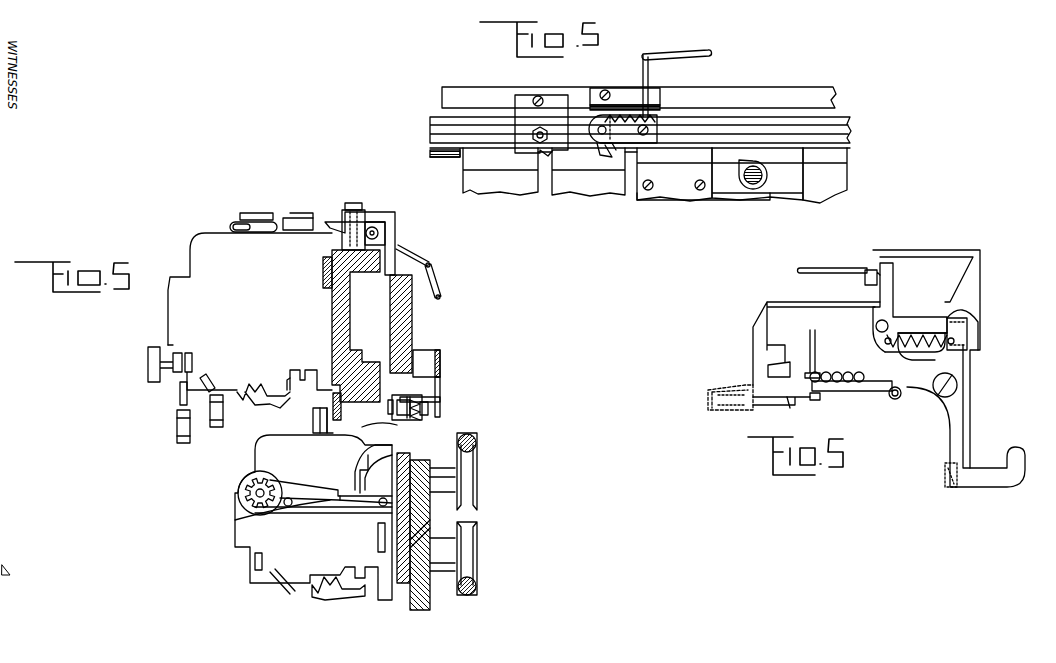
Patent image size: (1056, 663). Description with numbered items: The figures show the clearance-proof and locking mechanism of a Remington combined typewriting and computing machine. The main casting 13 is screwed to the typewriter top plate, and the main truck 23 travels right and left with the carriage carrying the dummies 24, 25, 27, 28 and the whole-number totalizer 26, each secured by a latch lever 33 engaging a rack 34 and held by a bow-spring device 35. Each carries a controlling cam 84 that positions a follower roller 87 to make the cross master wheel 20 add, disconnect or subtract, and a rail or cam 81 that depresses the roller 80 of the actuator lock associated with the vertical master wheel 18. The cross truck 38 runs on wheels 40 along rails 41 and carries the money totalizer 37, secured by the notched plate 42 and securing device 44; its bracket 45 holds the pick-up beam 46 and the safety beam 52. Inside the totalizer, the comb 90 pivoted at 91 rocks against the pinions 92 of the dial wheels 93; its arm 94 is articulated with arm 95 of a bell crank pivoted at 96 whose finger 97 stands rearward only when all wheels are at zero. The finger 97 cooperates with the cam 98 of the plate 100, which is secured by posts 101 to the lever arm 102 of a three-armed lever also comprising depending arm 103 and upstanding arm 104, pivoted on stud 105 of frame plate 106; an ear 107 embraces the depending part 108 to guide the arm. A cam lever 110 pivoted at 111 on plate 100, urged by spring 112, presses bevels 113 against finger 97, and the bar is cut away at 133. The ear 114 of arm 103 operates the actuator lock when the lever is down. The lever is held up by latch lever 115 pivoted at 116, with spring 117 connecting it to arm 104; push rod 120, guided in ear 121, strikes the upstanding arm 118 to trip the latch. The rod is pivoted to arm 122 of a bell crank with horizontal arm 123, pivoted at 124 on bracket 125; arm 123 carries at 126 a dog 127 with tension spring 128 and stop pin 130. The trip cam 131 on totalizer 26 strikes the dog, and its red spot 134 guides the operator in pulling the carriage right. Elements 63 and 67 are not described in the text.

In FIG. 4, the casting 13 is at (485, 88).
In FIG. 5, the casting 13 is at (412, 318).
In FIG. 5, the vertical master wheel 18 is at (258, 400).
In FIG. 5, the cross master wheel 20 is at (326, 598).
In FIG. 4, the main truck 23 is at (432, 135).
In FIG. 5, the main truck 23 is at (332, 323).
In FIG. 4, the dummy 24 is at (500, 171).
In FIG. 4, the dummy 25 is at (575, 196).
In FIG. 4, the totalizer 26 is at (692, 200).
In FIG. 4, the dummy 27 is at (773, 196).
In FIG. 4, the dummy 28 is at (818, 189).
In FIG. 5, the latch lever 33 is at (258, 213).
In FIG. 4, the rack 34 is at (455, 158).
In FIG. 5, the rack 34 is at (323, 272).
In FIG. 5, the bow-spring device 35 is at (232, 225).
In FIG. 5, the money totalizer 37 is at (255, 455).
In FIG. 5, the cross truck 38 is at (431, 605).
In FIG. 5, the wheels 40 is at (478, 500).
In FIG. 5, the tracks or rails 41 is at (476, 446).
In FIG. 5, the plate 42 is at (360, 481).
In FIG. 5, the securing device 44 is at (383, 554).
In FIG. 5, the bracket 45 is at (313, 420).
In FIG. 5, the pick-up beam 46 is at (338, 424).
In FIG. 5, the safety beam 52 is at (320, 434).
In FIG. 5, the casing wall 63 is at (318, 389).
In FIG. 5, the shaft 67 is at (421, 535).
In FIG. 5, the roller 80 is at (222, 419).
In FIG. 5, the rail or cam 81 is at (209, 385).
In FIG. 5, the controlling cam 84 is at (178, 398).
In FIG. 5, the follower roller 87 is at (177, 435).
In FIG. 5, the comb 90 is at (305, 472).
In FIG. 5, the pivots 91 is at (288, 507).
In FIG. 5, the pinions 92 is at (250, 519).
In FIG. 5, the dial wheels 93 is at (243, 500).
In FIG. 5, the arm 94 is at (310, 508).
In FIG. 5, the arm 95 is at (352, 505).
In FIG. 5, the pivot 96 is at (381, 507).
In FIG. 5, the finger 97 is at (385, 428).
In FIG. 6, the cam 98 is at (781, 405).
In FIG. 6, the plate 100 is at (860, 393).
In FIG. 5, the posts 101 is at (411, 396).
In FIG. 6, the posts 101 is at (908, 396).
In FIG. 5, the lever arm 102 is at (424, 419).
In FIG. 6, the lever arm 102 is at (882, 378).
In FIG. 6, the depending arm 103 is at (950, 437).
In FIG. 6, the upstanding arm 104 is at (962, 337).
In FIG. 6, the stud 105 is at (957, 387).
In FIG. 5, the frame plate 106 is at (441, 381).
In FIG. 6, the frame plate 106 is at (930, 252).
In FIG. 5, the ear 107 is at (441, 399).
In FIG. 6, the ear 107 is at (770, 367).
In FIG. 5, the depending part 108 is at (430, 407).
In FIG. 6, the depending part 108 is at (815, 345).
In FIG. 5, the cam lever 110 is at (395, 395).
In FIG. 6, the cam lever 110 is at (732, 386).
In FIG. 5, the pivot 111 is at (408, 376).
In FIG. 6, the pivot 111 is at (812, 400).
In FIG. 6, the spring 112 is at (826, 372).
In FIG. 5, the bevels 113 is at (388, 409).
In FIG. 6, the bevels 113 is at (740, 410).
In FIG. 6, the ear 114 is at (953, 488).
In FIG. 6, the latch lever 115 is at (910, 318).
In FIG. 6, the pivot 116 is at (876, 324).
In FIG. 6, the spring 117 is at (935, 352).
In FIG. 6, the upstanding arm 118 is at (894, 279).
In FIG. 4, the push rod 120 is at (680, 54).
In FIG. 5, the push rod 120 is at (434, 285).
In FIG. 6, the push rod 120 is at (818, 271).
In FIG. 6, the ear 121 is at (866, 268).
In FIG. 4, the arm 122 is at (648, 74).
In FIG. 5, the arm 122 is at (409, 259).
In FIG. 4, the arm 123 is at (608, 150).
In FIG. 5, the arm 123 is at (345, 216).
In FIG. 4, the pivot 124 is at (650, 131).
In FIG. 5, the pivot 124 is at (353, 206).
In FIG. 4, the bracket 125 is at (623, 105).
In FIG. 5, the bracket 125 is at (395, 214).
In FIG. 4, the pivot 126 is at (598, 130).
In FIG. 4, the dog 127 is at (600, 150).
In FIG. 5, the dog 127 is at (330, 229).
In FIG. 4, the tension spring 128 is at (664, 107).
In FIG. 4, the stop pin 130 is at (623, 129).
In FIG. 4, the trip cam 131 is at (728, 190).
In FIG. 5, the trip cam 131 is at (300, 232).
In FIG. 6, the cut-away 133 is at (790, 408).
In FIG. 4, the red spot 134 is at (764, 177).